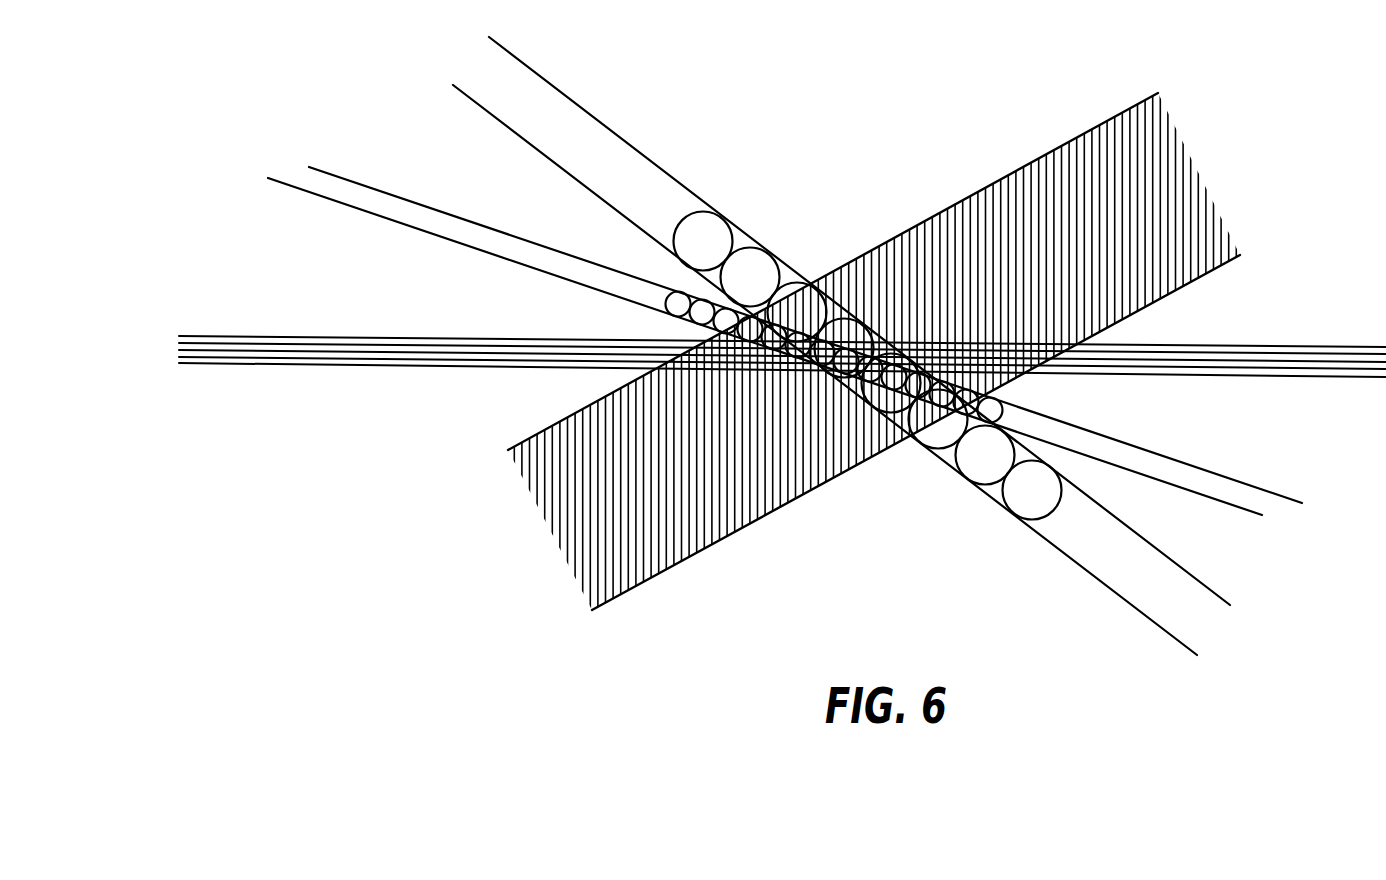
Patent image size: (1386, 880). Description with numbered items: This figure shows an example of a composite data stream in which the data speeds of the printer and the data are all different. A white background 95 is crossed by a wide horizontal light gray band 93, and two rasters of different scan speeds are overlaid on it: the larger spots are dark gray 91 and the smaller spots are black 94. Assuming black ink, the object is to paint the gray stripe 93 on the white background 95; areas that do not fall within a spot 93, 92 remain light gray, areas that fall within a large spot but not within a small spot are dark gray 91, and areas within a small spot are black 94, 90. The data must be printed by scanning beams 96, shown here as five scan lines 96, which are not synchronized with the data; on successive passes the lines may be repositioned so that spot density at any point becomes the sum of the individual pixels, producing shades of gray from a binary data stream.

The black area within small spot 90 is at (806, 401).
The dark gray large spots 91 is at (748, 275).
The spot 92 is at (870, 404).
The light gray band 93 is at (893, 322).
The black small spots 94 is at (676, 300).
The white background 95 is at (852, 210).
The scan lines 96 is at (1241, 358).